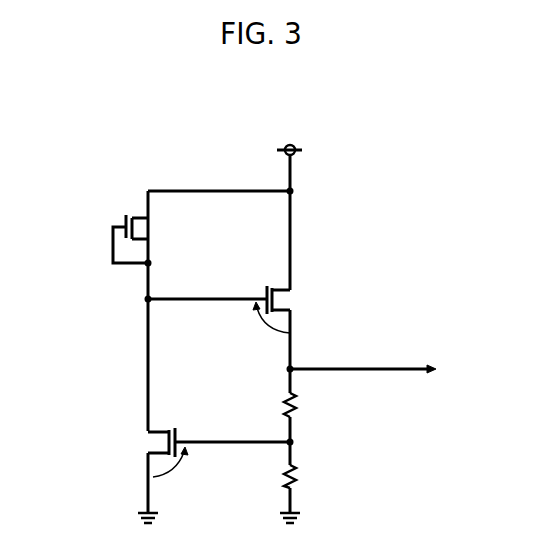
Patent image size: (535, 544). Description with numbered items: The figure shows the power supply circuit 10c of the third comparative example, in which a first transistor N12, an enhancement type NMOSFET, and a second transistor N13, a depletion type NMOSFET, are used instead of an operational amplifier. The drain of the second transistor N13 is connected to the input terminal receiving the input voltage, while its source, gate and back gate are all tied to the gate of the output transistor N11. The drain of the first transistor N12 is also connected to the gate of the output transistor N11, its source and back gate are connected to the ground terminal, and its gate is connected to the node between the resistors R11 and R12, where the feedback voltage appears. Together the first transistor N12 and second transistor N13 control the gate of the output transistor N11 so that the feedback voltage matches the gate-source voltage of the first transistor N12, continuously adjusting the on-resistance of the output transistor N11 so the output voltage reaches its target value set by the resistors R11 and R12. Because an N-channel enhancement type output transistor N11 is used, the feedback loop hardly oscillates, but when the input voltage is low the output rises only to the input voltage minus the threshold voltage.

The power supply circuit 10c is at (78, 120).
The second transistor N13 is at (160, 239).
The output transistor N11 is at (307, 300).
The first transistor N12 is at (132, 442).
The resistor R12 is at (319, 405).
The resistor R11 is at (319, 476).